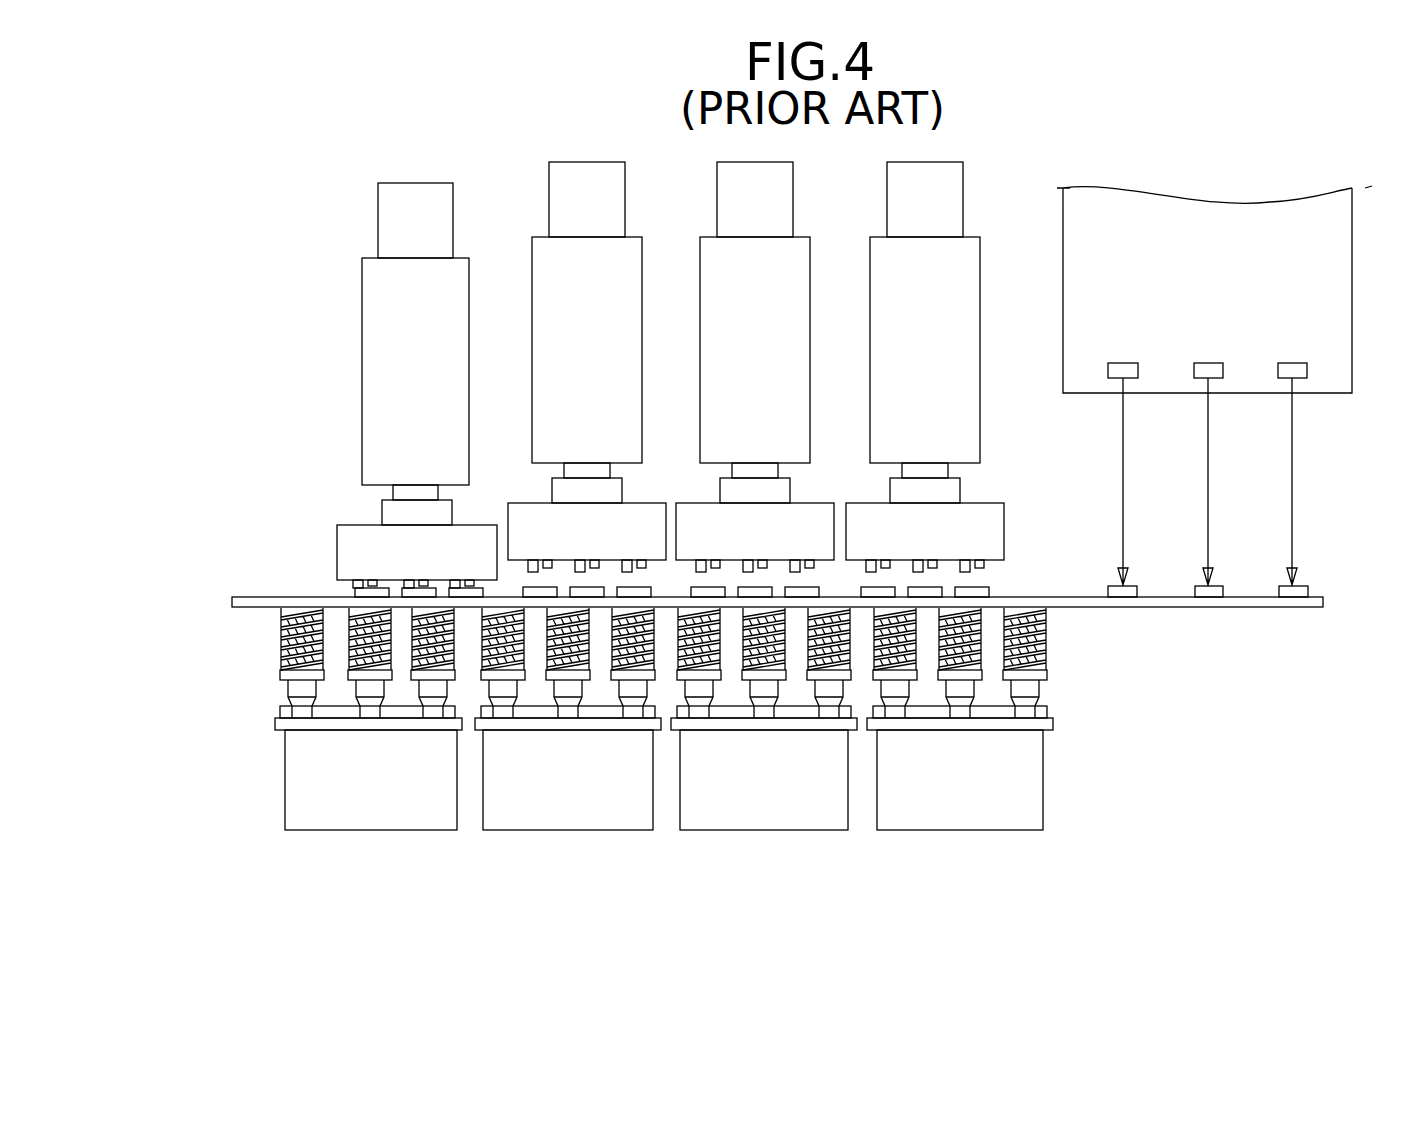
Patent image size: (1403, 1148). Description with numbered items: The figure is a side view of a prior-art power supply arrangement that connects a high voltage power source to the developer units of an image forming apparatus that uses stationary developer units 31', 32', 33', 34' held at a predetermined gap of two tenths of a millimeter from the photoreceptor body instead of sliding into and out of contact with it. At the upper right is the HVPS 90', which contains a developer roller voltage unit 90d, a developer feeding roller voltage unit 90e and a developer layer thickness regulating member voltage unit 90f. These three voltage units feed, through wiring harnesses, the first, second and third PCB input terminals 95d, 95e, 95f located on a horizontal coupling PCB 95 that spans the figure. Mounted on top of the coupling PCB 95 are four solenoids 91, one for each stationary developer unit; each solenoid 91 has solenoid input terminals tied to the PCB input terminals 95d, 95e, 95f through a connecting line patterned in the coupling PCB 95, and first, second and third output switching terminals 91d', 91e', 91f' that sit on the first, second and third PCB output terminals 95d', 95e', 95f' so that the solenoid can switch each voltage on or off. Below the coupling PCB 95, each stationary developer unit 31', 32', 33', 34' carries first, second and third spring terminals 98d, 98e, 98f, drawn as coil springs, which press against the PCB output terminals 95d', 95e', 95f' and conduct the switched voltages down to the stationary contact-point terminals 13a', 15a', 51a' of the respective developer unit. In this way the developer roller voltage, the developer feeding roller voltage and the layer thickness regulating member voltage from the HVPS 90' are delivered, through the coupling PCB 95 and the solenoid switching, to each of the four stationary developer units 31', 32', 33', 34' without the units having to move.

The solenoid 91 is at (362, 310).
The coupling printed circuit board 95 is at (240, 595).
The first output switching terminal 91d' is at (327, 549).
The second output switching terminal 91e' is at (364, 519).
The third output switching terminal 91f' is at (486, 523).
The first PCB output terminal 95d' is at (323, 580).
The second PCB output terminal 95e' is at (428, 509).
The third PCB output terminal 95f' is at (522, 560).
The first spring terminal 98d is at (345, 625).
The second spring terminal 98e is at (287, 640).
The third spring terminal 98f is at (408, 652).
The stationary contact-point terminal 13a' is at (319, 702).
The stationary contact-point terminal 15a' is at (363, 739).
The stationary contact-point terminal 51a' is at (426, 739).
The stationary developer unit 31' is at (371, 825).
The stationary developer unit 32' is at (568, 825).
The stationary developer unit 33' is at (764, 825).
The stationary developer unit 34' is at (960, 825).
The HVPS 90' is at (1214, 240).
The developer roller voltage unit 90d is at (1130, 378).
The developer feeding roller voltage unit 90e is at (1213, 378).
The developer layer thickness regulating member voltage unit 90f is at (1305, 372).
The first PCB input terminal 95d is at (1098, 552).
The second PCB input terminal 95e is at (1227, 547).
The third PCB input terminal 95f is at (1309, 547).